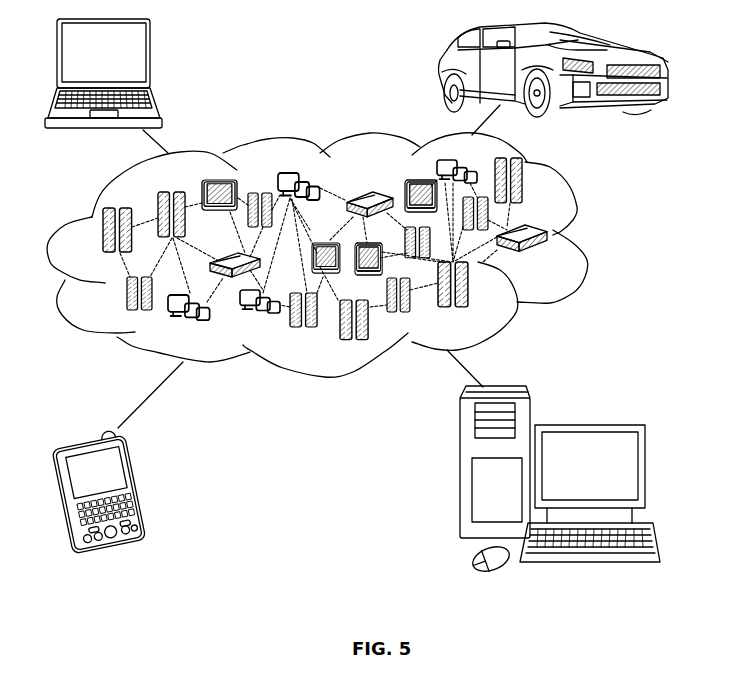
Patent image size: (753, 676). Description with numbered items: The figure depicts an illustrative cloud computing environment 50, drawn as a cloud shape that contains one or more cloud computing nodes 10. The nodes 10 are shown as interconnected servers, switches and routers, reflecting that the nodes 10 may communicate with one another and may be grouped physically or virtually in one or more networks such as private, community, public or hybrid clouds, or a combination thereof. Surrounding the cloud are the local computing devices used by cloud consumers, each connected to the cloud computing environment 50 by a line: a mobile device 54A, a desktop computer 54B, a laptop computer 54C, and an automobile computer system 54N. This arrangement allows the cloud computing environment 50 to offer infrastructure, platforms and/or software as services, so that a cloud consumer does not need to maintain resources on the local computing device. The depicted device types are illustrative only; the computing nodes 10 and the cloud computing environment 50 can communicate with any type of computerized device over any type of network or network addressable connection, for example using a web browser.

The cloud computing node 10 is at (558, 265).
The cloud computing environment 50 is at (590, 234).
The mobile device 54A is at (140, 487).
The desktop computer 54B is at (587, 425).
The laptop computer 54C is at (150, 58).
The automobile computer system 54N is at (440, 70).